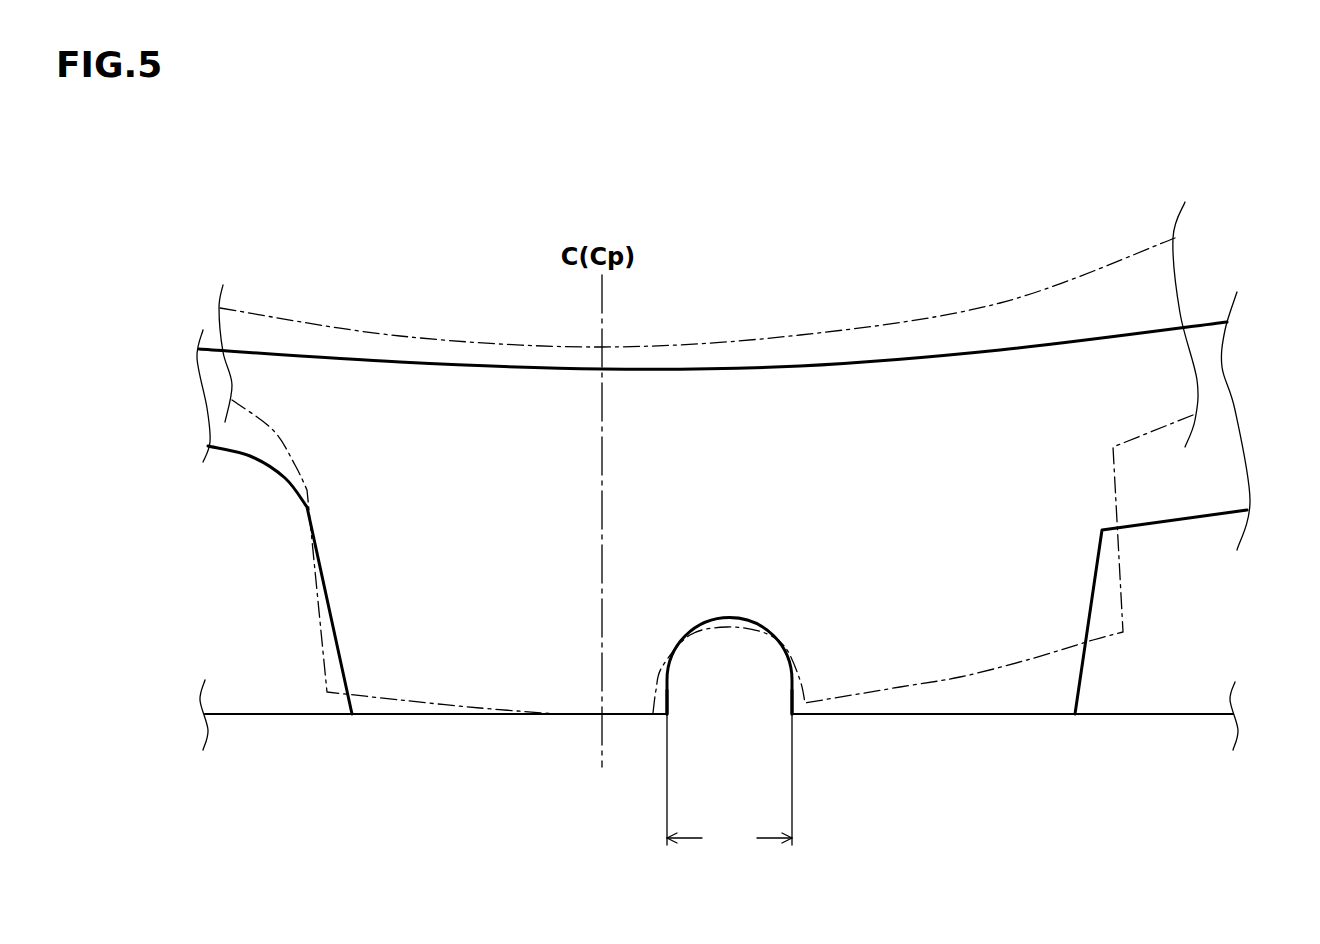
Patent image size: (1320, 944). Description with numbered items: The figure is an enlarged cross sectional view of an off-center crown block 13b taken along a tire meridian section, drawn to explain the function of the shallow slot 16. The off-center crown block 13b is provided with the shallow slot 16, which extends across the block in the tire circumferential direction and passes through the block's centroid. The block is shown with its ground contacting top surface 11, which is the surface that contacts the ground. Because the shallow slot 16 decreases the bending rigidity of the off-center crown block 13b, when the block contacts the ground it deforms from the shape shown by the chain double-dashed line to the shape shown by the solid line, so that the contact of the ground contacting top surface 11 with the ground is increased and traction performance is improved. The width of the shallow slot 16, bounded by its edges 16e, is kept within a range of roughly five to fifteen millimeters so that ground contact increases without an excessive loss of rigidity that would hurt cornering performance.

The ground contacting top surface 11 is at (418, 714).
The off-center crown block 13b is at (887, 440).
The shallow slot 16 is at (730, 657).
The end portion of protrusion 16e is at (792, 718).